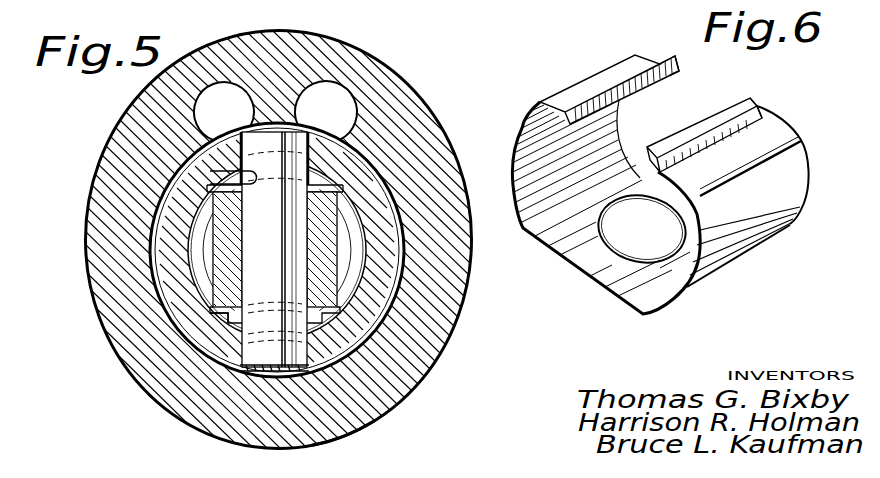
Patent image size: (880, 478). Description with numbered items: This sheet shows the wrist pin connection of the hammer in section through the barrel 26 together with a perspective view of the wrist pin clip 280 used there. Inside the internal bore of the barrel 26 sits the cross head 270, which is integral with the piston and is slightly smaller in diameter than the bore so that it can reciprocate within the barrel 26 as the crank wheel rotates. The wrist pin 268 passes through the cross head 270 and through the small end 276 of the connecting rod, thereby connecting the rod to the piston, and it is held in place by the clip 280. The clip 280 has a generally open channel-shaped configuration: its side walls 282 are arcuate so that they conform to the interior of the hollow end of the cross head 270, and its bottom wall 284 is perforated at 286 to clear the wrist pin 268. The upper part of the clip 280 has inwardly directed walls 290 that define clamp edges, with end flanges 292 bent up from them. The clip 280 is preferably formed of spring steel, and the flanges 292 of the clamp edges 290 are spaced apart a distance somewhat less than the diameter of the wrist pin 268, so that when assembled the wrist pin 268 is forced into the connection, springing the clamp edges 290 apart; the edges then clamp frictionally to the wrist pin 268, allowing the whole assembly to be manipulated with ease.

In FIG. 5, the barrel 26 is at (427, 357).
In FIG. 5, the wrist pin 268 is at (383, 397).
In FIG. 5, the cross head 270 is at (385, 120).
In FIG. 5, the small end of the connecting rod 276 is at (337, 263).
In FIG. 5, the clip 280 is at (188, 280).
In FIG. 6, the clip 280 is at (510, 148).
In FIG. 5, the side walls 282 is at (160, 243).
In FIG. 6, the side walls 282 is at (527, 192).
In FIG. 6, the bottom wall 284 is at (630, 302).
In FIG. 5, the perforation 286 is at (240, 176).
In FIG. 6, the perforation 286 is at (620, 253).
In FIG. 5, the inwardly directed walls 290 is at (331, 96).
In FIG. 6, the inwardly directed walls 290 is at (640, 55).
In FIG. 5, the end flanges 292 is at (200, 343).
In FIG. 6, the end flanges 292 is at (722, 114).